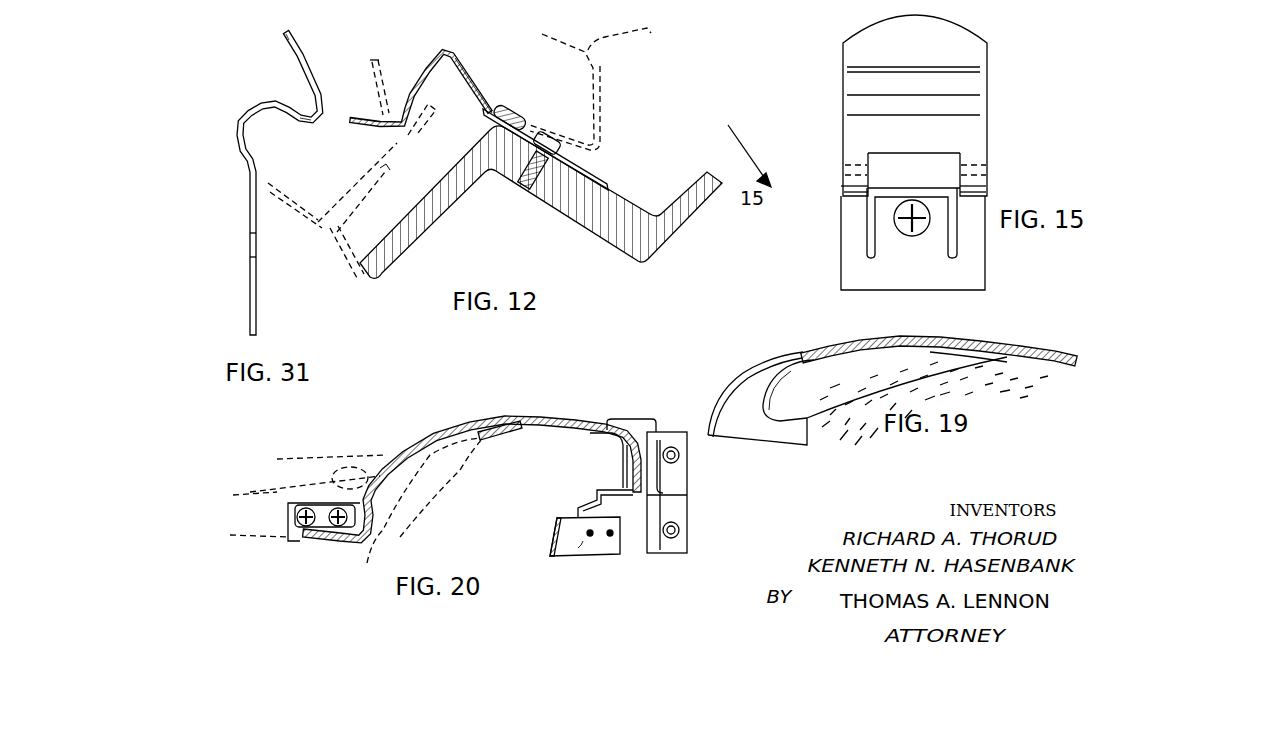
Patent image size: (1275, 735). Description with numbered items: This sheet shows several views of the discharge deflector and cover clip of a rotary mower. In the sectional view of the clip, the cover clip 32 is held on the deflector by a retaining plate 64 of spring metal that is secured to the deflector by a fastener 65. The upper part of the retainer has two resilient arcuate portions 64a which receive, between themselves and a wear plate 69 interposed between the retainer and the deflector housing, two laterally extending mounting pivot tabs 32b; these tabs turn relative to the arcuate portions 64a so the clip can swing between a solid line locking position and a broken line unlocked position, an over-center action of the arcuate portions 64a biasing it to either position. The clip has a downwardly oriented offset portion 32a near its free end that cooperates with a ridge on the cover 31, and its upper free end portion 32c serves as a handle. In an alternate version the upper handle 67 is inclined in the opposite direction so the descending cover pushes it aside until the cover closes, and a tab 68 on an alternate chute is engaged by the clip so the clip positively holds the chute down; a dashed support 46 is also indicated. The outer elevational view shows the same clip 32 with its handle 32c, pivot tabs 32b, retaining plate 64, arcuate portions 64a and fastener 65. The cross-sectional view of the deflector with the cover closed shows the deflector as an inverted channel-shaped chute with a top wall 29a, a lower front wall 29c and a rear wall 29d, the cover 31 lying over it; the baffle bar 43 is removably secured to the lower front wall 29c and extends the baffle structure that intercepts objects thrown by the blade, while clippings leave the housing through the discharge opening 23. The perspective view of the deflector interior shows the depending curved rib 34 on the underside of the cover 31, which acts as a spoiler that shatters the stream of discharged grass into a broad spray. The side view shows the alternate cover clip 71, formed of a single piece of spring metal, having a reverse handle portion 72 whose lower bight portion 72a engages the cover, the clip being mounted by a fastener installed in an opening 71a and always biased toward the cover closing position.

In FIG. 20, the discharge opening 23 is at (538, 484).
In FIG. 20, the top wall 29a is at (592, 423).
In FIG. 20, the lower front wall 29c is at (640, 545).
In FIG. 20, the rear wall 29d is at (370, 546).
In FIG. 19, the cover 31 is at (1006, 346).
In FIG. 20, the cover 31 is at (447, 432).
In FIG. 12, the cover clip 32 is at (470, 92).
In FIG. 15, the cover clip 32 is at (985, 126).
In FIG. 12, the offset portion 32a is at (397, 133).
In FIG. 15, the mounting pivot tabs 32b is at (836, 172).
In FIG. 12, the upper free end portion 32c is at (360, 130).
In FIG. 15, the upper free end portion 32c is at (965, 46).
In FIG. 19, the curved rib 34 is at (972, 360).
In FIG. 20, the baffle bar 43 is at (577, 551).
In FIG. 12, the phantom support 46 is at (302, 205).
In FIG. 12, the retaining plate 64 is at (592, 175).
In FIG. 15, the retaining plate 64 is at (970, 272).
In FIG. 12, the arcuate portions 64a is at (507, 112).
In FIG. 15, the arcuate portions 64a is at (841, 182).
In FIG. 12, the fastener 65 is at (533, 176).
In FIG. 15, the fastener 65 is at (912, 238).
In FIG. 12, the upper handle 67 is at (370, 80).
In FIG. 12, the tab 68 is at (387, 170).
In FIG. 12, the wear plate 69 is at (471, 82).
In FIG. 31, the cover clip 71 is at (240, 110).
In FIG. 31, the opening 71a is at (250, 253).
In FIG. 31, the reverse handle portion 72 is at (297, 40).
In FIG. 31, the lower bight portion 72a is at (318, 122).